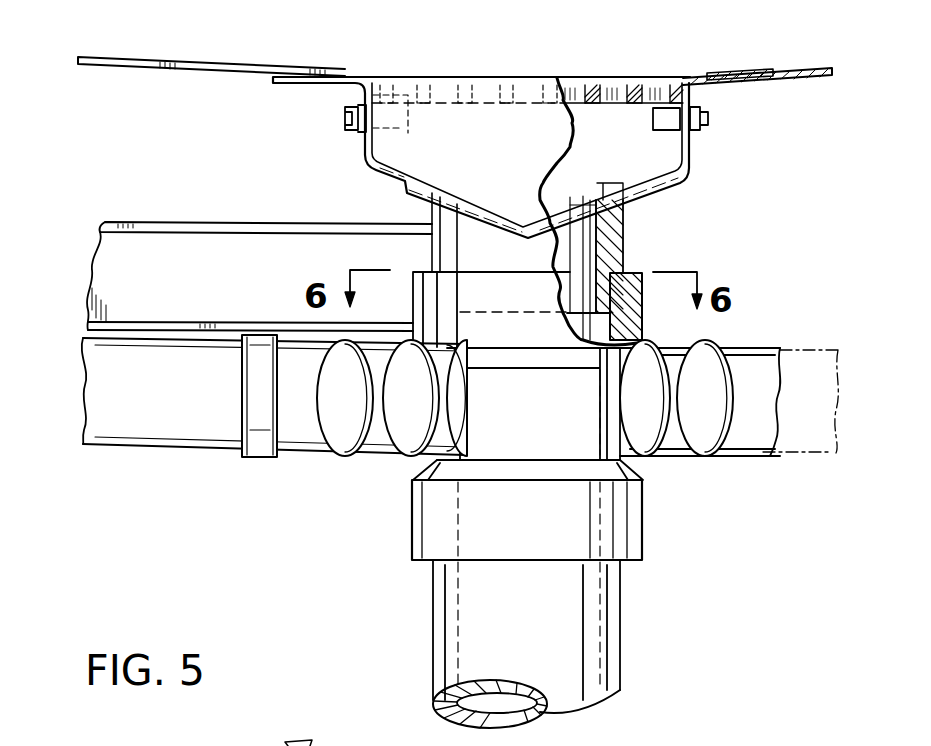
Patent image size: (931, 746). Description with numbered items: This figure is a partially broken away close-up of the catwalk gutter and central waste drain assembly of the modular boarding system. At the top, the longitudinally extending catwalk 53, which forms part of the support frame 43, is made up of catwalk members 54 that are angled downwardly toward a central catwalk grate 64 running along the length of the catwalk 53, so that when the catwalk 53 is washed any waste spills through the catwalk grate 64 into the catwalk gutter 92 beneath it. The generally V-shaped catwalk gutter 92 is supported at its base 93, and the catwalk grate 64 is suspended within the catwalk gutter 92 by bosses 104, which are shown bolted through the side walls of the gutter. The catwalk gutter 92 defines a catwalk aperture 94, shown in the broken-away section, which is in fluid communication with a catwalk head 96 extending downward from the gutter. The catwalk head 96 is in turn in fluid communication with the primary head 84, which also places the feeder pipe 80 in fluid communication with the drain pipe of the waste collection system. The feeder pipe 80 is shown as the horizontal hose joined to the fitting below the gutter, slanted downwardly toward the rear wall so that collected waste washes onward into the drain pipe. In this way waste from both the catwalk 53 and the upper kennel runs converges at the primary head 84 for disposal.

The catwalk 53 is at (229, 66).
The catwalk member 54 is at (161, 72).
The support frame 43 is at (229, 218).
The bosses 104 is at (396, 133).
The catwalk gutter 92 is at (686, 178).
The catwalk grate 64 is at (590, 108).
The base 93 is at (640, 182).
The catwalk aperture 94 is at (556, 165).
The catwalk head 96 is at (625, 238).
The primary head 84 is at (632, 270).
The feeder pipe 80 is at (134, 446).